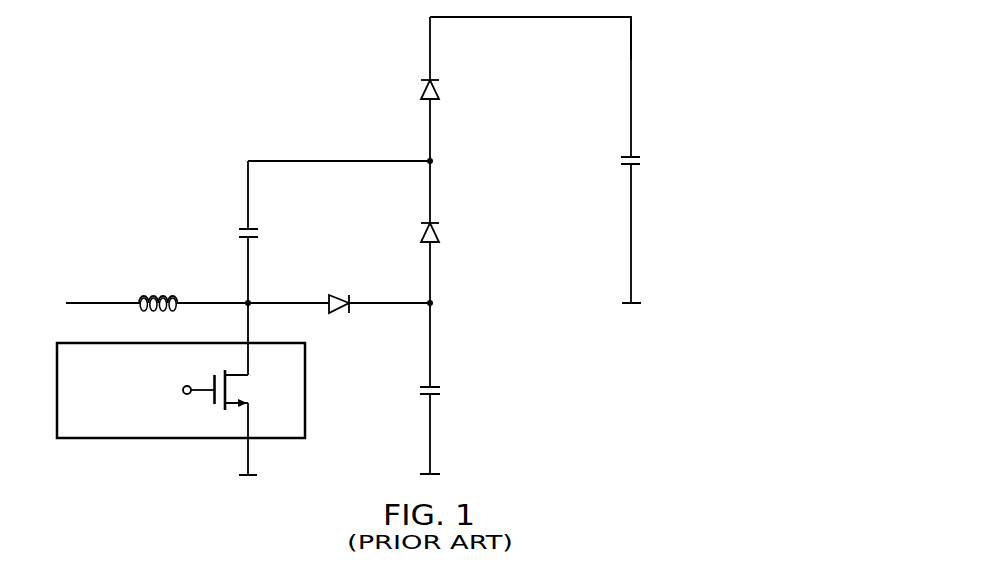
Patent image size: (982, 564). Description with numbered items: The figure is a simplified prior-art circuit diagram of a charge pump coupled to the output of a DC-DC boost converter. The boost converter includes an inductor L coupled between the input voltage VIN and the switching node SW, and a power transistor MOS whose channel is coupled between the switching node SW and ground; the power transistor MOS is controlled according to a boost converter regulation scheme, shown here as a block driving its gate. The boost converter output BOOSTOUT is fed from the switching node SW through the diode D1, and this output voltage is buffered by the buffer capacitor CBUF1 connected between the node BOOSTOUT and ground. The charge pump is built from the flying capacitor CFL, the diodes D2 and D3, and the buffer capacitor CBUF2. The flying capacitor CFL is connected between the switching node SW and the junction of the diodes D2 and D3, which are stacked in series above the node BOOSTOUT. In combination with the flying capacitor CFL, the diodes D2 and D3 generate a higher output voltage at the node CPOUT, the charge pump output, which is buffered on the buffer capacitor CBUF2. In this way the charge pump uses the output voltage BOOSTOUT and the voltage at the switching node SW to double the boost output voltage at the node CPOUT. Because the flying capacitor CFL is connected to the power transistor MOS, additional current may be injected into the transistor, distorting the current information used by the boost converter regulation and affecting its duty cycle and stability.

The input voltage VIN is at (82, 303).
The inductor L is at (157, 291).
The switching node SW is at (264, 293).
The diode D1 is at (339, 317).
The diode D2 is at (442, 234).
The diode D3 is at (442, 90).
The flying capacitor CFL is at (265, 234).
The buffer capacitor CBUF1 is at (461, 391).
The buffer capacitor CBUF2 is at (659, 164).
The boost converter output BOOSTOUT is at (502, 307).
The charge pump output node CPOUT is at (696, 68).
The power transistor MOS is at (181, 390).